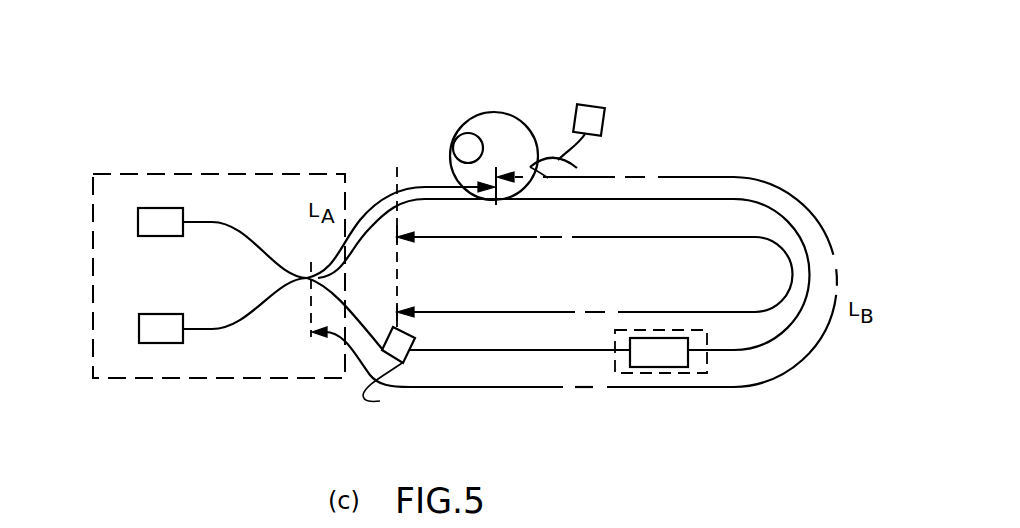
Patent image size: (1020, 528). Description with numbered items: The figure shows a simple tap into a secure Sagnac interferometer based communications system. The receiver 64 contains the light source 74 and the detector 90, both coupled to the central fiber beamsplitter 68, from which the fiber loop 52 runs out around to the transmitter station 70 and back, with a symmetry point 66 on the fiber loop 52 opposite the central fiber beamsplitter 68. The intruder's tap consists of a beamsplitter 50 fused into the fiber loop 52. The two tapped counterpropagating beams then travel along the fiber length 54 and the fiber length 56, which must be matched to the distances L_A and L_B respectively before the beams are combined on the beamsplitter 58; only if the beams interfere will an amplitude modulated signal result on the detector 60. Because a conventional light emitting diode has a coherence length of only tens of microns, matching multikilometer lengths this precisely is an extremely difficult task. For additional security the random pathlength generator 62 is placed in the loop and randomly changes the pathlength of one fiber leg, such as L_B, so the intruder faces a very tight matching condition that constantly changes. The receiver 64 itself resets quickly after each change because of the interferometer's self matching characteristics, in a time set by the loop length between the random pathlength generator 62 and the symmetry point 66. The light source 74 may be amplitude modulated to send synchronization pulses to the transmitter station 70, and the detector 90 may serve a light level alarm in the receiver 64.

The beamsplitter 50 is at (497, 205).
The fiber loop 52 is at (602, 292).
The fiber length 54 is at (489, 112).
The fiber length 56 is at (533, 167).
The beamsplitter 58 is at (558, 160).
The detector 60 is at (596, 106).
The random pathlength generator 62 is at (415, 340).
The receiver 64 is at (93, 322).
The symmetry point 66 is at (393, 188).
The central fiber beamsplitter 68 is at (320, 255).
The transmitter station 70 is at (707, 369).
The light source 74 is at (156, 208).
The detector 90 is at (176, 314).